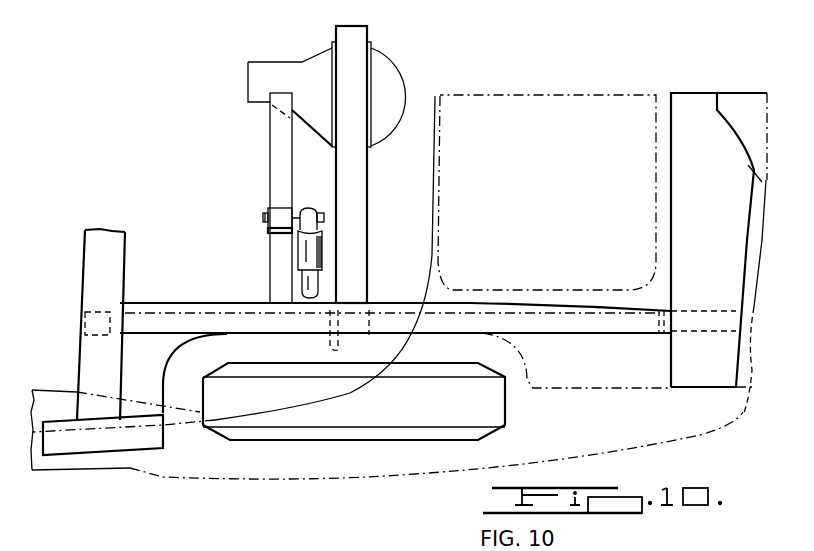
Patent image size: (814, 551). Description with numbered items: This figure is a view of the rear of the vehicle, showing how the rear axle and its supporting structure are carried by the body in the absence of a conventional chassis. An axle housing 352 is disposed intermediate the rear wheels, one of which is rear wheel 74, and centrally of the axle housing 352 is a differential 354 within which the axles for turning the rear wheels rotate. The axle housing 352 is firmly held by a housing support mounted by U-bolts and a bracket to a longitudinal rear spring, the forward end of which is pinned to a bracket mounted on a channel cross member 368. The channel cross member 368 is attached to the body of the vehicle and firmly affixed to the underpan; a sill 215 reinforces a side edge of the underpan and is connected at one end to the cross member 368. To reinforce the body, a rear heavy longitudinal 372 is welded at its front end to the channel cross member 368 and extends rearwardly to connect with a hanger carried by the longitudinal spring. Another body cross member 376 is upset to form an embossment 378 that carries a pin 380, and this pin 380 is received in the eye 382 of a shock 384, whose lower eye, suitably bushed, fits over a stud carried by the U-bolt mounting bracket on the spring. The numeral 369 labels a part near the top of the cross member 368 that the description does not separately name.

The rear wheel 74 is at (360, 418).
The sill 215 is at (85, 448).
The axle housing 352 is at (362, 180).
The differential 354 is at (380, 66).
The channel cross member 368 is at (125, 245).
The post top 369 is at (100, 230).
The rear heavy longitudinal 372 is at (152, 313).
The body cross member 376 is at (277, 133).
The embossment 378 is at (280, 220).
The pin 380 is at (277, 231).
The eye 382 is at (324, 218).
The shock 384 is at (302, 247).